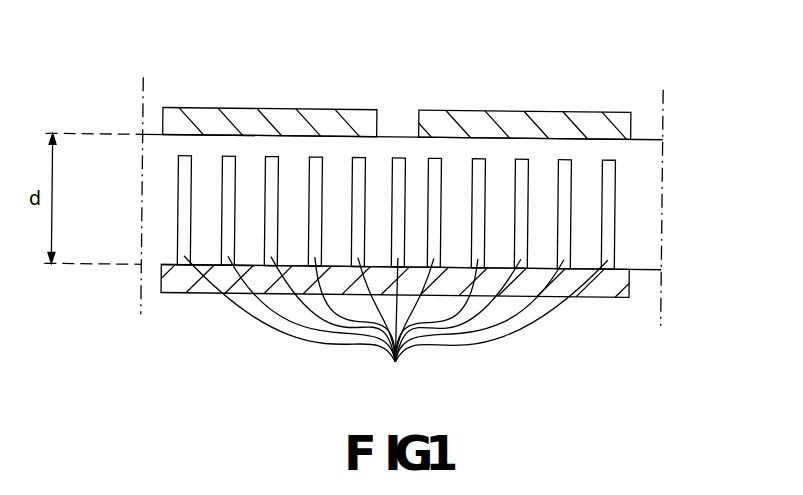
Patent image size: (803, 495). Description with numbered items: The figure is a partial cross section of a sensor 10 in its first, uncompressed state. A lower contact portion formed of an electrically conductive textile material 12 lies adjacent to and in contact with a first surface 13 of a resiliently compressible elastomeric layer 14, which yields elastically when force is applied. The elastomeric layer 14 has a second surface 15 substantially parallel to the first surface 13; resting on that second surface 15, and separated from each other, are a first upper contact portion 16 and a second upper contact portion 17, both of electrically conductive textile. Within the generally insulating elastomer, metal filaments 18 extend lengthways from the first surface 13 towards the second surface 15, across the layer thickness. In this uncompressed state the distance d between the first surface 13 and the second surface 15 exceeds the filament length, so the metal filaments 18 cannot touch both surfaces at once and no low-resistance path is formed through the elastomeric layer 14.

The sensor 10 is at (504, 57).
The electrically conductive textile material 12 is at (620, 295).
The first surface 13 is at (637, 271).
The elastomeric layer 14 is at (630, 193).
The second surface 15 is at (638, 140).
The first upper contact portion 16 is at (572, 118).
The second upper contact portion 17 is at (322, 118).
The metal filaments 18 is at (395, 321).